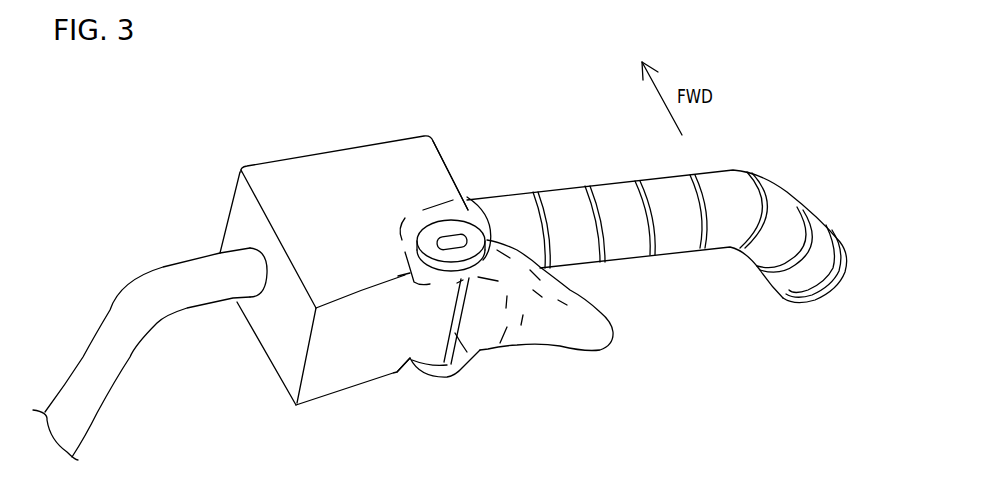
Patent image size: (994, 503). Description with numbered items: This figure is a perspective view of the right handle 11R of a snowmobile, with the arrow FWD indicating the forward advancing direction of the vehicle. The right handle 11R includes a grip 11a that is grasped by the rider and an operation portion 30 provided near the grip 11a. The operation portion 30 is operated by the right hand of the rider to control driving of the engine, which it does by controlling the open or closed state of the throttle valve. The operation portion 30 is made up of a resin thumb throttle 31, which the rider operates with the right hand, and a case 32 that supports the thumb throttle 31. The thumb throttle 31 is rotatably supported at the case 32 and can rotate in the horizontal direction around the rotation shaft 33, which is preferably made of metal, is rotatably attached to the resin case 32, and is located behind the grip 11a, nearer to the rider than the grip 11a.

The right handle 11R is at (440, 117).
The grip 11a is at (622, 180).
The operation portion 30 is at (465, 390).
The thumb throttle 31 is at (556, 335).
The case 32 is at (342, 373).
The rotation shaft 33 is at (450, 237).